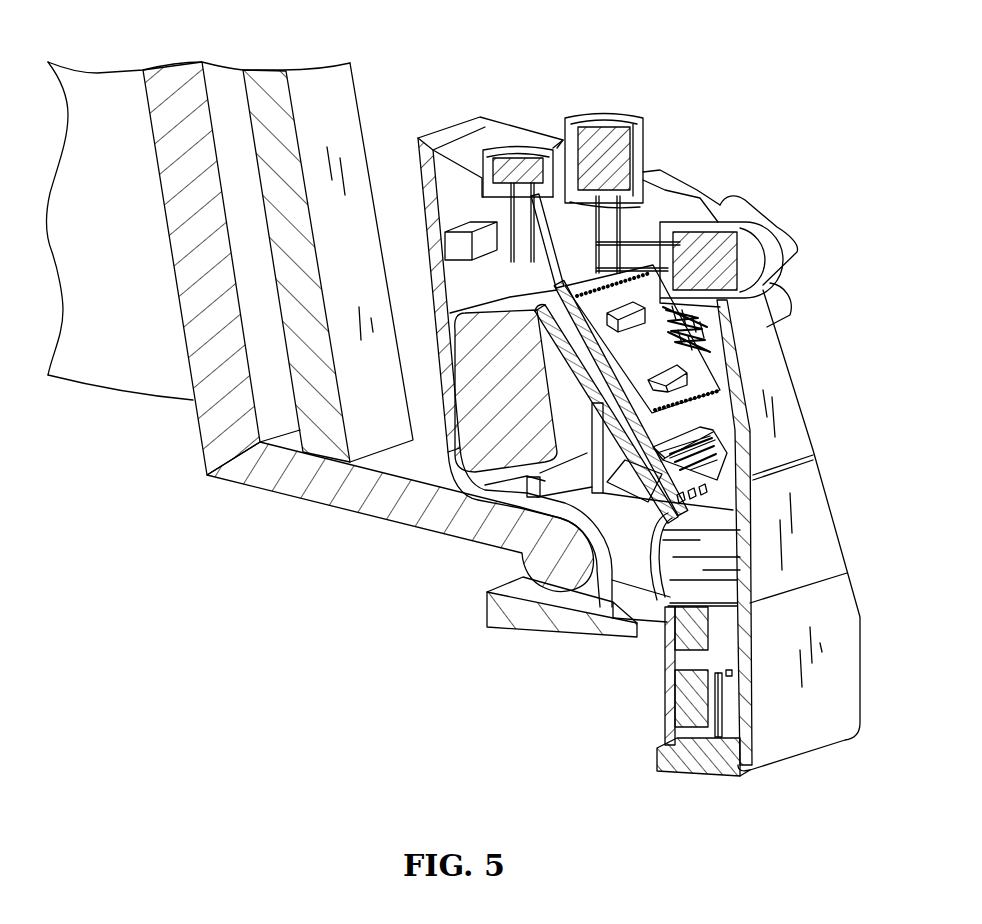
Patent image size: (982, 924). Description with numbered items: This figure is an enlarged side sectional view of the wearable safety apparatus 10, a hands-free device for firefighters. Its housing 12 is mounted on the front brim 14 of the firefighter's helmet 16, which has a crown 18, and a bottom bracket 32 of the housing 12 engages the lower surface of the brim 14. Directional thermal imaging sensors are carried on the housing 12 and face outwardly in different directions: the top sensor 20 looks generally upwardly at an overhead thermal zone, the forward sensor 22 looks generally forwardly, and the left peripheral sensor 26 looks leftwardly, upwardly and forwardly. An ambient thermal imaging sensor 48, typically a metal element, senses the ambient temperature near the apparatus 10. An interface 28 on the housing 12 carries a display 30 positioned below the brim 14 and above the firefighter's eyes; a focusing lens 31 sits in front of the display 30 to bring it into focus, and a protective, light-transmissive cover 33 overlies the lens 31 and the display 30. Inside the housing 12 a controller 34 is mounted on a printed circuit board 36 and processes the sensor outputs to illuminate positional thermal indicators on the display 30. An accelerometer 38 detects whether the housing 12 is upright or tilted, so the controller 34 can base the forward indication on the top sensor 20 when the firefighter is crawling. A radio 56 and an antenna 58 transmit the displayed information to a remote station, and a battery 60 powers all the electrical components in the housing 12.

The wearable safety apparatus 10 is at (509, 112).
The housing 12 is at (465, 128).
The front brim 14 is at (355, 487).
The helmet 16 is at (170, 424).
The crown 18 is at (97, 73).
The top sensor 20 is at (603, 127).
The forward sensor 22 is at (687, 237).
The left peripheral sensor 26 is at (780, 235).
The interface 28 is at (810, 733).
The display 30 is at (710, 700).
The focusing lens 31 is at (682, 705).
The bottom bracket 32 is at (533, 623).
The protective light-transmissive cover 33 is at (668, 665).
The controller 34 is at (630, 313).
The printed circuit board 36 is at (589, 284).
The accelerometer 38 is at (600, 380).
The ambient thermal imaging sensor 48 is at (522, 160).
The radio 56 is at (687, 378).
The antenna 58 is at (450, 244).
The battery 60 is at (470, 384).